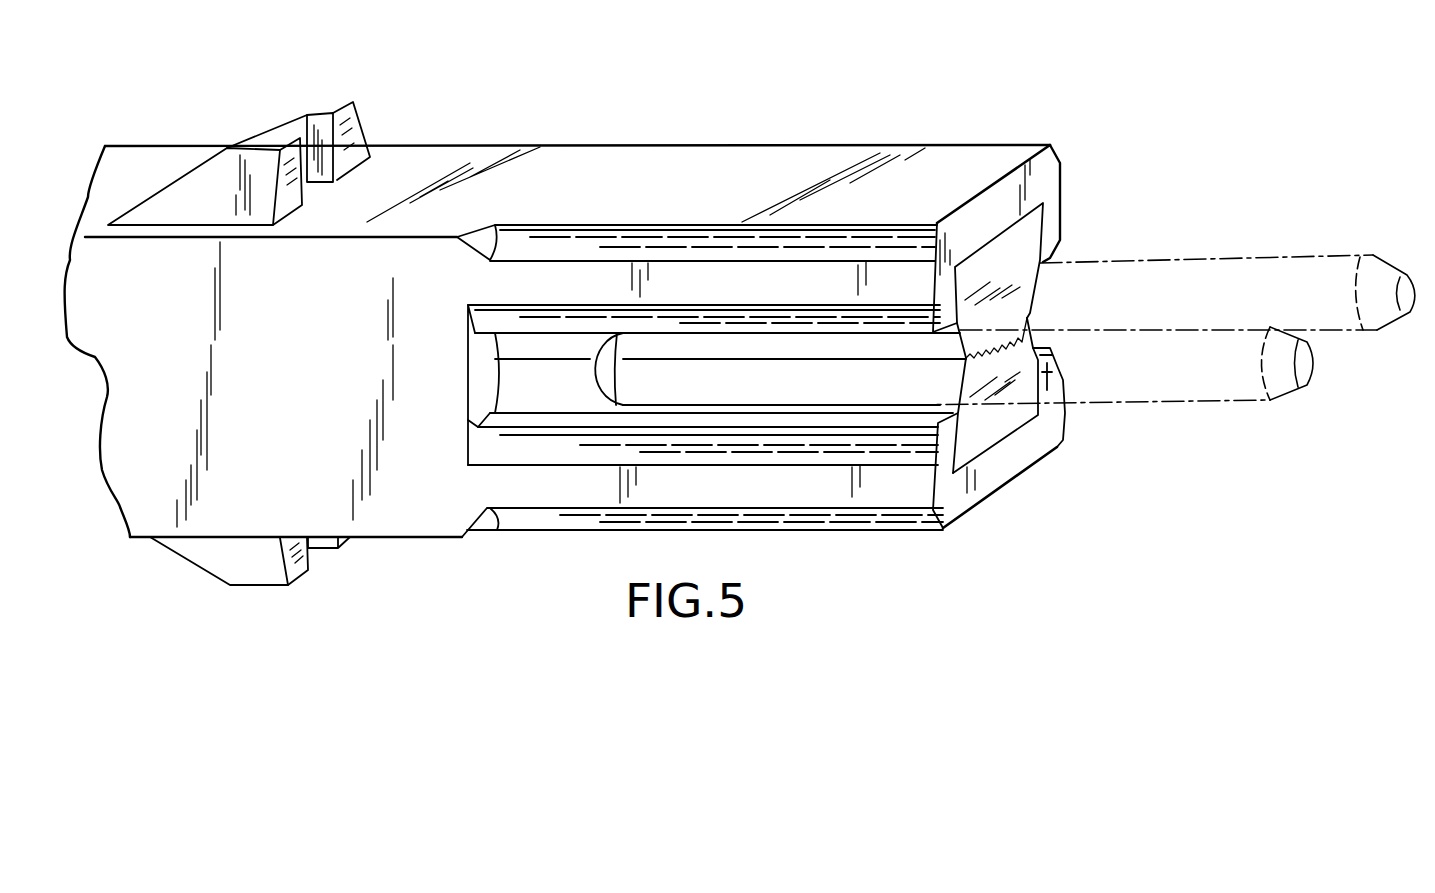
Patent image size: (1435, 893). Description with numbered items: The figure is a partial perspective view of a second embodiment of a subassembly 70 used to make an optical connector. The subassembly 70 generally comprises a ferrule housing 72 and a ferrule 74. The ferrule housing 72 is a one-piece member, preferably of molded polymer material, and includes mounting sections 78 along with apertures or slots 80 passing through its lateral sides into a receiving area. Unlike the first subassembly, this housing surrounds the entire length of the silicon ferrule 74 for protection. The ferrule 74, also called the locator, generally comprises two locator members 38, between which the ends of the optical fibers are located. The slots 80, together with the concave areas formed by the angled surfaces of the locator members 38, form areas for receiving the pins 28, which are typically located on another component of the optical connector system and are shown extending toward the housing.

The subassembly 70 is at (422, 144).
The mounting sections 78 is at (306, 110).
The ferrule housing 72 is at (325, 512).
The slots 80 is at (550, 390).
The locator members 38 is at (1002, 253).
The ferrule 74 is at (1028, 232).
The pins 28 is at (1383, 308).